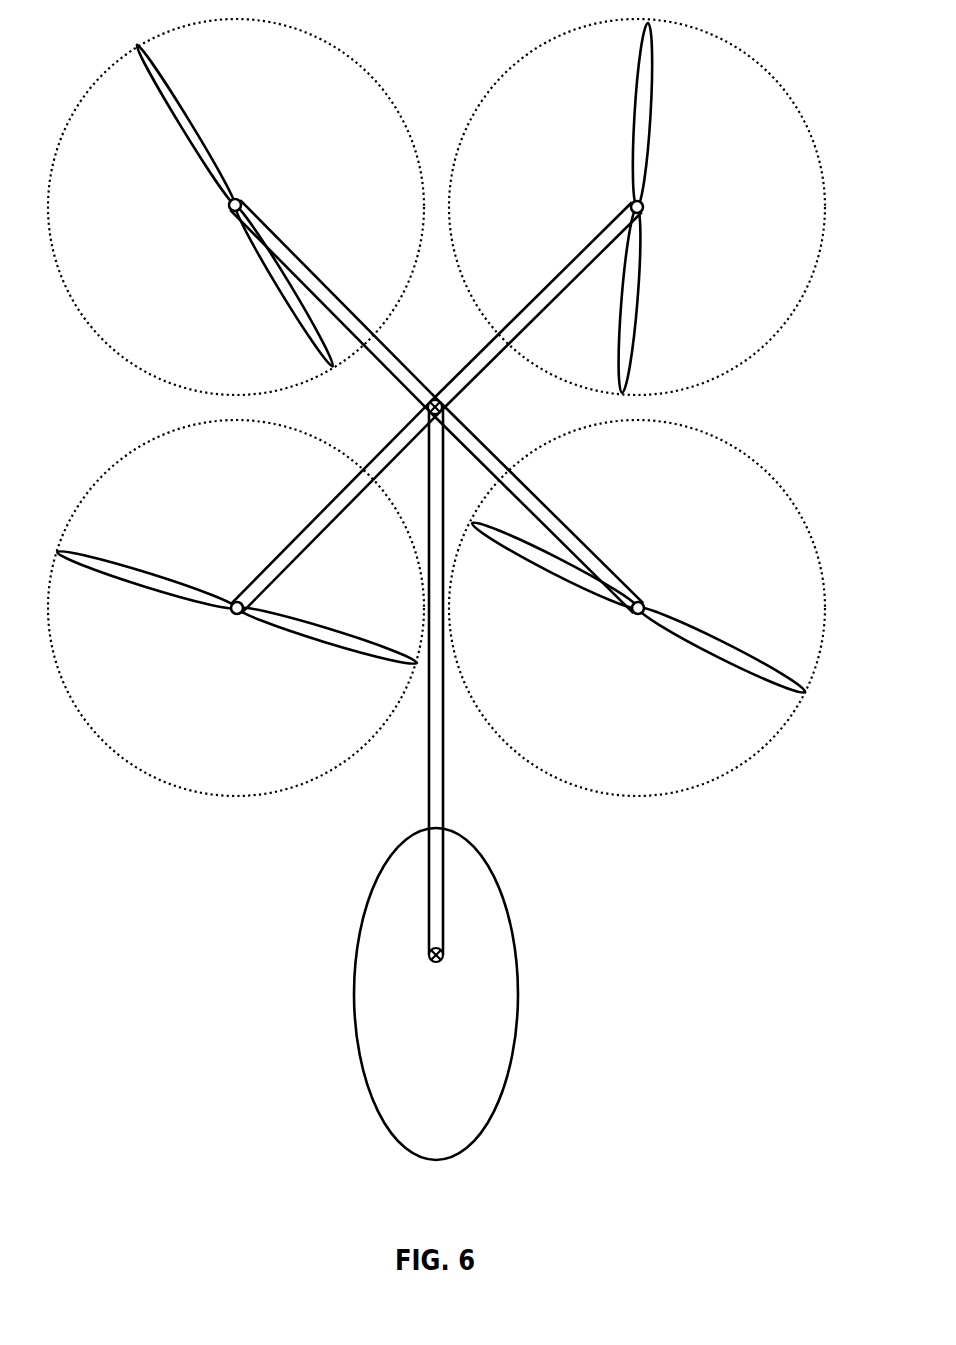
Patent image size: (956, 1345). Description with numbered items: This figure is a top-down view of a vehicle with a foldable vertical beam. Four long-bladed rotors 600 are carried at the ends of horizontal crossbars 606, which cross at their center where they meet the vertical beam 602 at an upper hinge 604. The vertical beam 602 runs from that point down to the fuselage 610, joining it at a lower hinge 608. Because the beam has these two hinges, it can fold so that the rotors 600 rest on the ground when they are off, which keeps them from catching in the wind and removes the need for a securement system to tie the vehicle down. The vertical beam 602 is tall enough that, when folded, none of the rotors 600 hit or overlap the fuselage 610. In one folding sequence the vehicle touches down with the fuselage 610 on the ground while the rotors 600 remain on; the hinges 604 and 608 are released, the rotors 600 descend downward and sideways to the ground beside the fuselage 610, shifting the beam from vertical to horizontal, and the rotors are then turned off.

The long-bladed rotors 600 is at (727, 644).
The vertical beam 602 is at (444, 774).
The upper hinge 604 is at (445, 407).
The horizontal crossbars 606 is at (555, 514).
The lower hinge 608 is at (434, 963).
The fuselage 610 is at (518, 995).